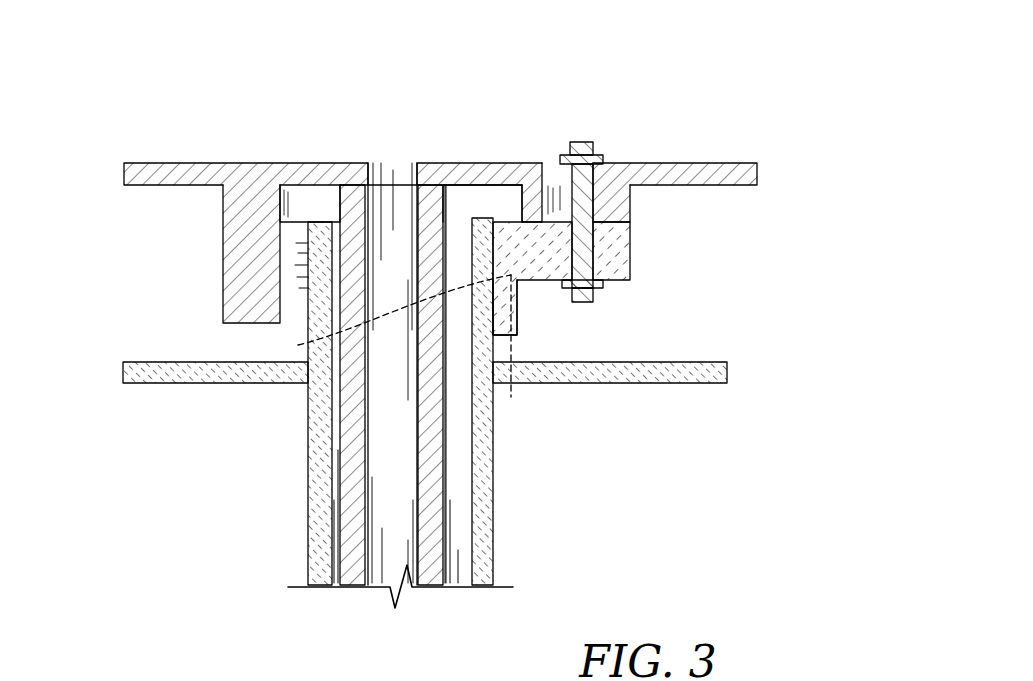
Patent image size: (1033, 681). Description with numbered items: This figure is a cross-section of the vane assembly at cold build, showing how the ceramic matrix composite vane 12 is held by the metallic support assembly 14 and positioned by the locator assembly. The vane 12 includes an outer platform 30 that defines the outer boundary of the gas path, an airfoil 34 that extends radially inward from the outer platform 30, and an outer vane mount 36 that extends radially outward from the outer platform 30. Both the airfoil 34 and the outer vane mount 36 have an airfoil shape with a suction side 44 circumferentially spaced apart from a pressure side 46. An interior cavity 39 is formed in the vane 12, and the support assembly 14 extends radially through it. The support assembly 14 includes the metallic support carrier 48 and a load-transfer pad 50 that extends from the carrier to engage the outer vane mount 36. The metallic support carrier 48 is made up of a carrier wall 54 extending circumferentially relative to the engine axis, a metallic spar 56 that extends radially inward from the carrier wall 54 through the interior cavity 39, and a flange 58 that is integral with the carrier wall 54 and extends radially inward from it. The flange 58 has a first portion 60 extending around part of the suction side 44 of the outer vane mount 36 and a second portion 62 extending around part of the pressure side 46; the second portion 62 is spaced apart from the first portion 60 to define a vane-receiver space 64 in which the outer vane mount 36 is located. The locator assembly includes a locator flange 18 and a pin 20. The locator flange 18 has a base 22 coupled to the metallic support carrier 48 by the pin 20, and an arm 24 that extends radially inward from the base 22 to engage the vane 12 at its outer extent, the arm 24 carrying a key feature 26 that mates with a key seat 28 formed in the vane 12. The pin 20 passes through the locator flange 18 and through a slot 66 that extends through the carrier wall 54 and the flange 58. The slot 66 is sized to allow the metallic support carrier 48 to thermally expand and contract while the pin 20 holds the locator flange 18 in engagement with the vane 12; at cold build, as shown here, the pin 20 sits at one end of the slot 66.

The vane 12 is at (628, 505).
The support assembly 14 is at (243, 77).
The locator flange 18 is at (672, 270).
The pin 20 is at (602, 293).
The base 22 is at (632, 250).
The arm 24 is at (518, 327).
The key feature 26 is at (384, 318).
The key seat 28 is at (511, 352).
The outer platform 30 is at (707, 355).
The airfoil 34 is at (412, 413).
The outer vane mount 36 is at (337, 250).
The interior cavity 39 is at (460, 557).
The suction side 44 is at (308, 457).
The pressure side 46 is at (495, 447).
The metallic support carrier 48 is at (438, 171).
The load-transfer pad 50 is at (296, 215).
The carrier wall 54 is at (323, 158).
The metallic spar 56 is at (444, 226).
The flange 58 is at (123, 288).
The first portion 60 is at (218, 233).
The second portion 62 is at (632, 203).
The vane-receiver space 64 is at (505, 195).
The slot 66 is at (555, 166).